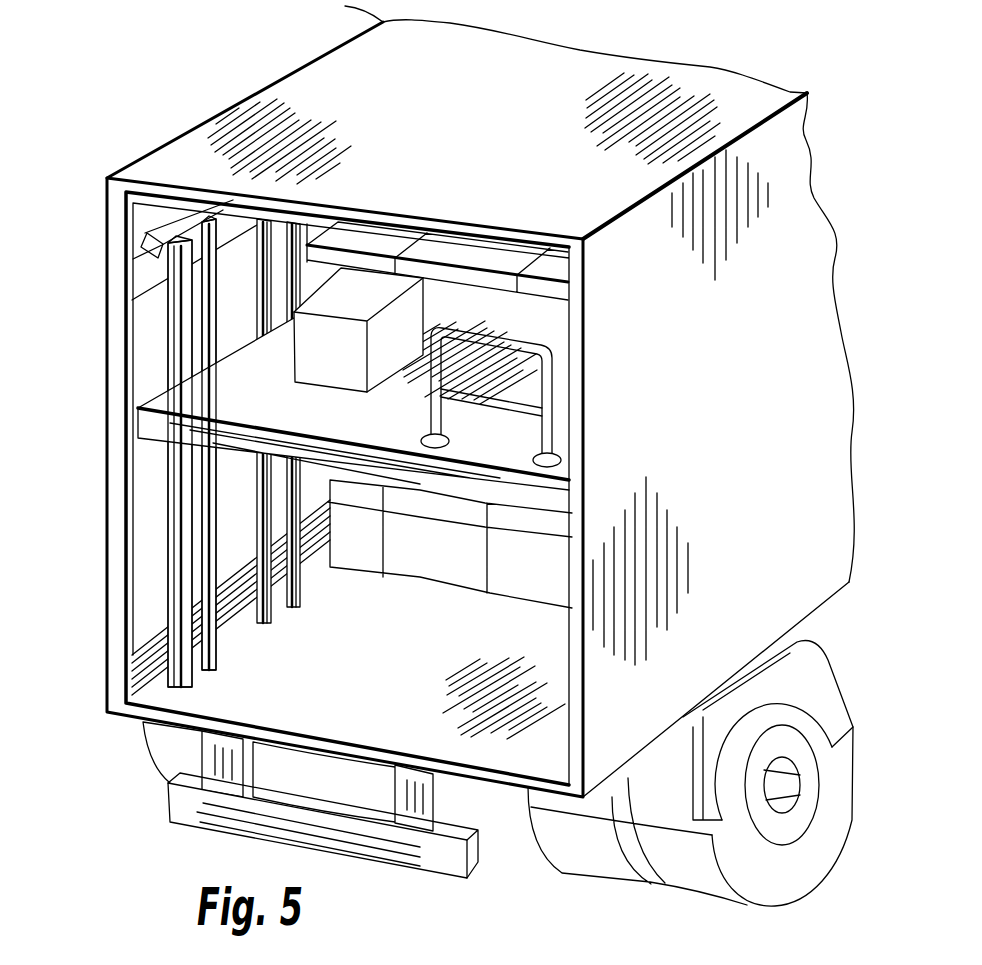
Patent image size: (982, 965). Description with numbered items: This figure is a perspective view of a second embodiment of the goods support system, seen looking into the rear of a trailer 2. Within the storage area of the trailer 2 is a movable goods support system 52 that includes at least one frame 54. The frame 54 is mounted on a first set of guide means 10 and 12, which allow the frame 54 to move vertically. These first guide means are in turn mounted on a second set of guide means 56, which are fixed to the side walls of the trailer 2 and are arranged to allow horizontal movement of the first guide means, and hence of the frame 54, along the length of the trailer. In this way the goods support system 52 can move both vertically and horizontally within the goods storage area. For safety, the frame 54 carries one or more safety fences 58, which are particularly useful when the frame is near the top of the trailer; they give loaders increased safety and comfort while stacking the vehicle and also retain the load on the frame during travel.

The trailer 2 is at (252, 133).
The guide means 10 is at (173, 712).
The guide means 12 is at (262, 628).
The movable goods support system 52 is at (168, 438).
The frame 54 is at (205, 393).
The second set of guide means 56 is at (147, 278).
The safety fence 58 is at (549, 379).